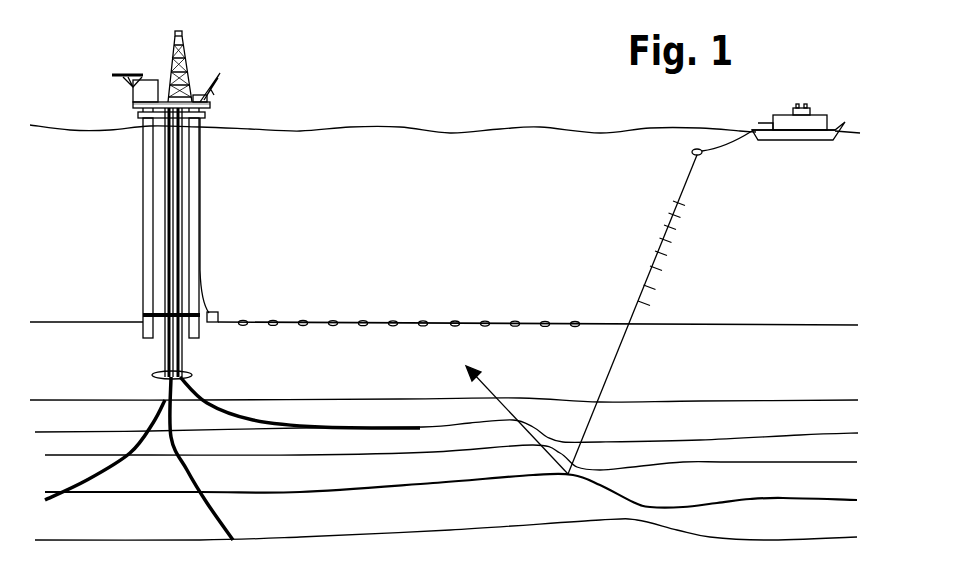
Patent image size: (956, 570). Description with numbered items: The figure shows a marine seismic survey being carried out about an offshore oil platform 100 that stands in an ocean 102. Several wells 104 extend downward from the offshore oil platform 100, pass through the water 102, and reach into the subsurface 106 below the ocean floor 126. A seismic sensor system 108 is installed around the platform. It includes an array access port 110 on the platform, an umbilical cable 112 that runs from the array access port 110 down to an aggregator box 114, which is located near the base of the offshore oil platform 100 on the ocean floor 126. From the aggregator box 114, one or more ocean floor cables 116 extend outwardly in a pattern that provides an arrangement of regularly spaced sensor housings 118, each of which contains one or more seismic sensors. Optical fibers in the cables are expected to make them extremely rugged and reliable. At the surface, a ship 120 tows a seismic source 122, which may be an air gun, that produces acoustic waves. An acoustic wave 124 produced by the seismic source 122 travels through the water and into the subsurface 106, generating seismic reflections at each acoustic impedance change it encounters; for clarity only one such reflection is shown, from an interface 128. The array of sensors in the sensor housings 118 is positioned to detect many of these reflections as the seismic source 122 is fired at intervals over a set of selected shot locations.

The offshore oil platform 100 is at (185, 58).
The ocean 102 is at (80, 183).
The wells 104 is at (183, 372).
The subsurface 106 is at (80, 383).
The seismic sensor system 108 is at (304, 56).
The array access port 110 is at (205, 110).
The umbilical cable 112 is at (194, 258).
The aggregator box 114 is at (218, 313).
The ocean floor cables 116 is at (316, 321).
The sensor housings 118 is at (515, 321).
The ship 120 is at (780, 117).
The seismic source 122 is at (705, 146).
The acoustic wave 124 is at (653, 275).
The ocean floor 126 is at (771, 325).
The interface 128 is at (541, 478).